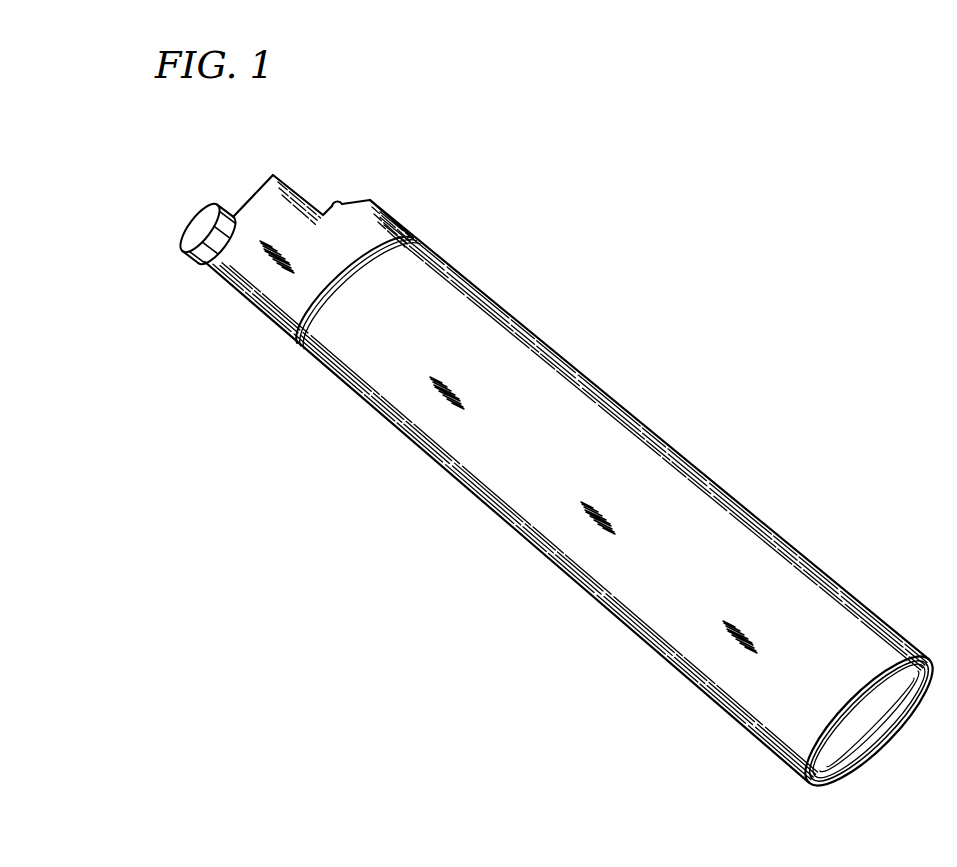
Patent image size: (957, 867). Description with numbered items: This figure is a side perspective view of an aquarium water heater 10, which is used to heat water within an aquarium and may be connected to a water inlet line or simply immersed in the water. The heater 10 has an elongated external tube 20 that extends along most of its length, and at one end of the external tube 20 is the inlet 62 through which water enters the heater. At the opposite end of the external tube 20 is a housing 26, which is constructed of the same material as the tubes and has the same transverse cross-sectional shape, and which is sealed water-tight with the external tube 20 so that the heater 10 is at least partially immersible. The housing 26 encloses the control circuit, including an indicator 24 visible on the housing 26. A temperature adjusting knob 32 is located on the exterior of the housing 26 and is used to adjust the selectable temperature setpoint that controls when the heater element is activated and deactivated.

The aquarium water heater 10 is at (447, 146).
The external tube 20 is at (538, 376).
The indicator 24 is at (338, 198).
The housing 26 is at (276, 295).
The temperature adjusting knob 32 is at (190, 256).
The inlet 62 is at (867, 722).